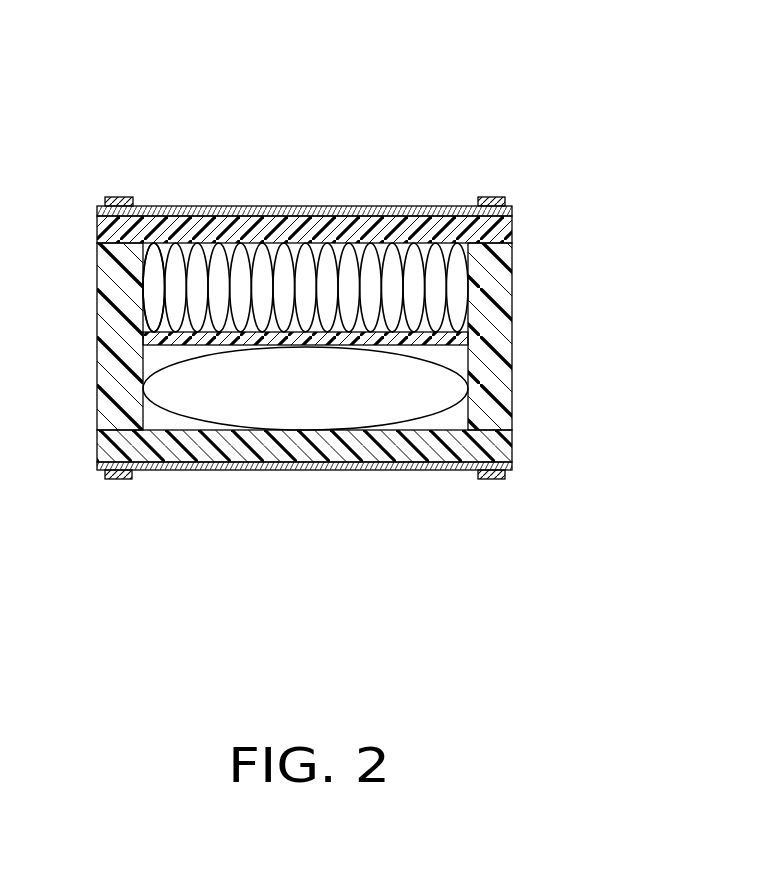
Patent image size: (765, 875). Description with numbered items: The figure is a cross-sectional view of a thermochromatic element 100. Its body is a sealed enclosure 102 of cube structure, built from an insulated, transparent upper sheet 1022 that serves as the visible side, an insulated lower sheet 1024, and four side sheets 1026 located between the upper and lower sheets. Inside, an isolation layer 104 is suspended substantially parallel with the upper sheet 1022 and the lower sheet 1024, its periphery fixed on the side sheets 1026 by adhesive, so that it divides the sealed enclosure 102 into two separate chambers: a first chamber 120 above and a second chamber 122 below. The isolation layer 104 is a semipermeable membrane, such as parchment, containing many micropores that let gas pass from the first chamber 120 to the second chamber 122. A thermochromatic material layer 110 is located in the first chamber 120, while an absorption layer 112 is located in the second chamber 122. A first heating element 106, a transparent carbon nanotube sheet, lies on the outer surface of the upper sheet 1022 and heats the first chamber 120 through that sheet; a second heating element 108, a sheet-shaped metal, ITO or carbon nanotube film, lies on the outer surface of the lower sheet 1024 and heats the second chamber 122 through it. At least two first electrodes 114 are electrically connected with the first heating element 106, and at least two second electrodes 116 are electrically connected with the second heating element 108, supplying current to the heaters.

The thermochromatic element 100 is at (328, 77).
The sealed enclosure 102 is at (628, 223).
The upper sheet 1022 is at (513, 233).
The lower sheet 1024 is at (505, 450).
The side sheets 1026 is at (493, 307).
The isolation layer 104 is at (153, 335).
The first heating element 106 is at (392, 206).
The second heating element 108 is at (378, 470).
The thermochromatic material layer 110 is at (240, 262).
The absorption layer 112 is at (283, 410).
The first electrodes 114 is at (115, 197).
The second electrodes 116 is at (110, 473).
The first chamber 120 is at (164, 258).
The second chamber 122 is at (157, 415).